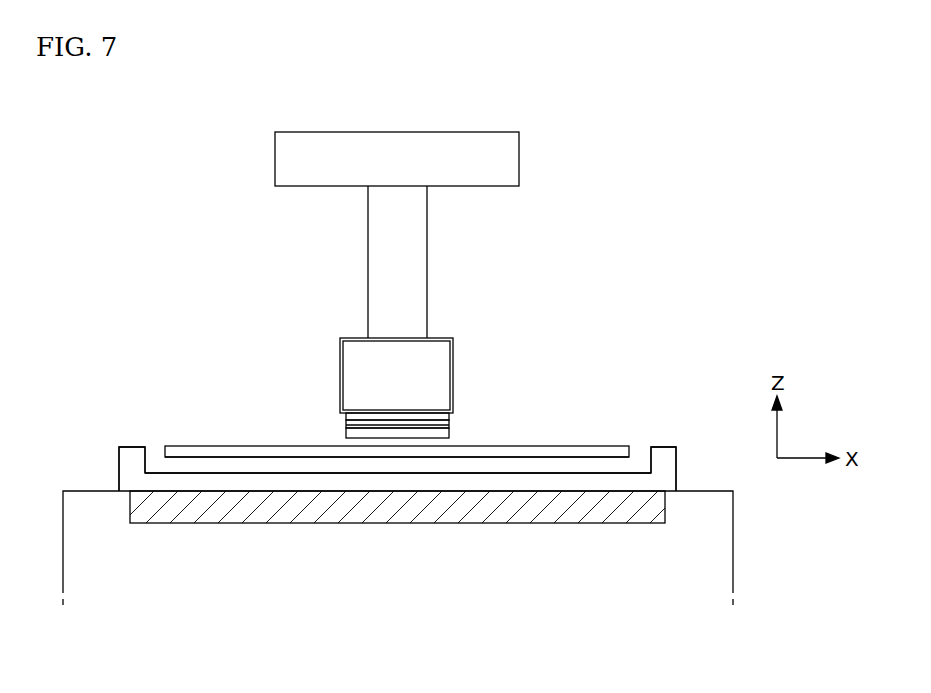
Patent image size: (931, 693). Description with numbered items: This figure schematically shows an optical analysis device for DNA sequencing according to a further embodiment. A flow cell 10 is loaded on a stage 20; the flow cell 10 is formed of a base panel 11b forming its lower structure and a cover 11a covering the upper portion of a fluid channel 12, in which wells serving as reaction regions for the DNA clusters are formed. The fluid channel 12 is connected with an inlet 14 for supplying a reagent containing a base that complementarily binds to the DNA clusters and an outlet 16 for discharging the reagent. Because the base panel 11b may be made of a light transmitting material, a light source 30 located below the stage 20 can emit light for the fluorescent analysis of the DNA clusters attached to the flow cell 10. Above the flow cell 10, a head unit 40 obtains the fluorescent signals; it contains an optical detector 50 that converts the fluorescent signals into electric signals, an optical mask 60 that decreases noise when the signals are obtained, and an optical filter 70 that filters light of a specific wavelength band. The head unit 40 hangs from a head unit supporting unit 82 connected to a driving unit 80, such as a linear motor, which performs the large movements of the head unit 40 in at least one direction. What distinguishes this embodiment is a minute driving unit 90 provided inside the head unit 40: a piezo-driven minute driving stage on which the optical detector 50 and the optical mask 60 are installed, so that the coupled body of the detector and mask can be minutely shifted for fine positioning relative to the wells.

The flow cell 10 is at (379, 492).
The cover 11a is at (603, 452).
The base panel 11b is at (610, 482).
The fluid channel 12 is at (236, 464).
The inlet 14 is at (155, 452).
The outlet 16 is at (642, 456).
The stage 20 is at (750, 539).
The light source 30 is at (468, 528).
The head unit 40 is at (472, 352).
The optical detector 50 is at (445, 417).
The optical mask 60 is at (445, 425).
The optical filter 70 is at (352, 435).
The driving unit 80 is at (538, 140).
The head unit supporting unit 82 is at (427, 236).
The minute driving unit 90 is at (340, 360).